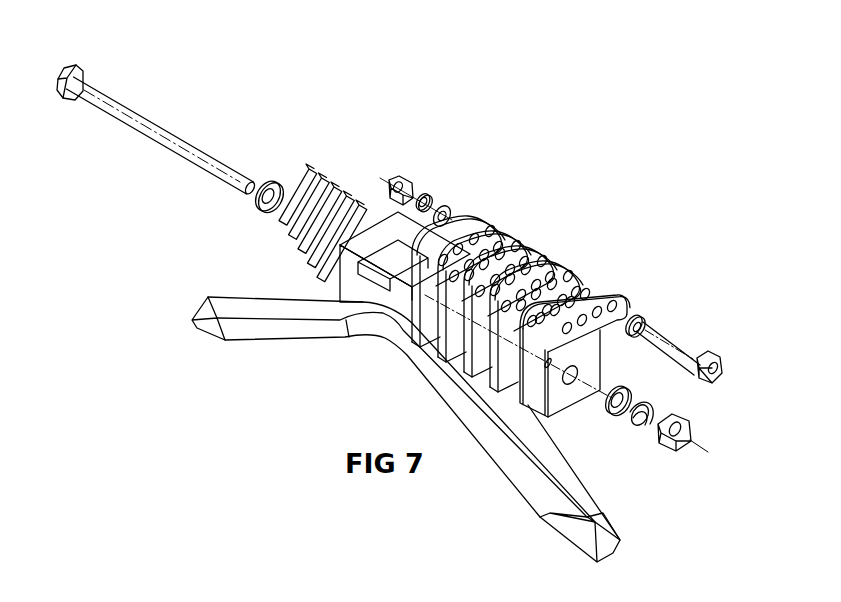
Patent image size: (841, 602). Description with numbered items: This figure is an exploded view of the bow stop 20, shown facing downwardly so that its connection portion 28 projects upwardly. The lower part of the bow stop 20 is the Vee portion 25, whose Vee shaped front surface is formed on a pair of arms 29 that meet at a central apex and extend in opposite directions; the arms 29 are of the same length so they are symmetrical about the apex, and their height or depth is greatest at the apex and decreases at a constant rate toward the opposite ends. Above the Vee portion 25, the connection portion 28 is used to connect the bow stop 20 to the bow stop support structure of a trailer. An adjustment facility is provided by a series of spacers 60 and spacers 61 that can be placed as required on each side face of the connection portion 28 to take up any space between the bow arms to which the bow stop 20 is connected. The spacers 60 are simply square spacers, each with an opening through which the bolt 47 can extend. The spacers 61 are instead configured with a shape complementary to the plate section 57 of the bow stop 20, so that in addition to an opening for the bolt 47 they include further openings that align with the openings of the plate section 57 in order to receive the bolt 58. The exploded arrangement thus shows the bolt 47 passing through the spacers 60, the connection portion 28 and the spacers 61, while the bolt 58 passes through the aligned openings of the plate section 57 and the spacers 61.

The bow stop 20 is at (150, 280).
The Vee portion 25 is at (355, 358).
The connection portion 28 is at (405, 255).
The arms 29 is at (280, 291).
The bolt 47 is at (152, 123).
The plate section 57 is at (458, 237).
The bolt 58 is at (680, 340).
The spacers 60 is at (308, 162).
The spacers 61 is at (517, 223).